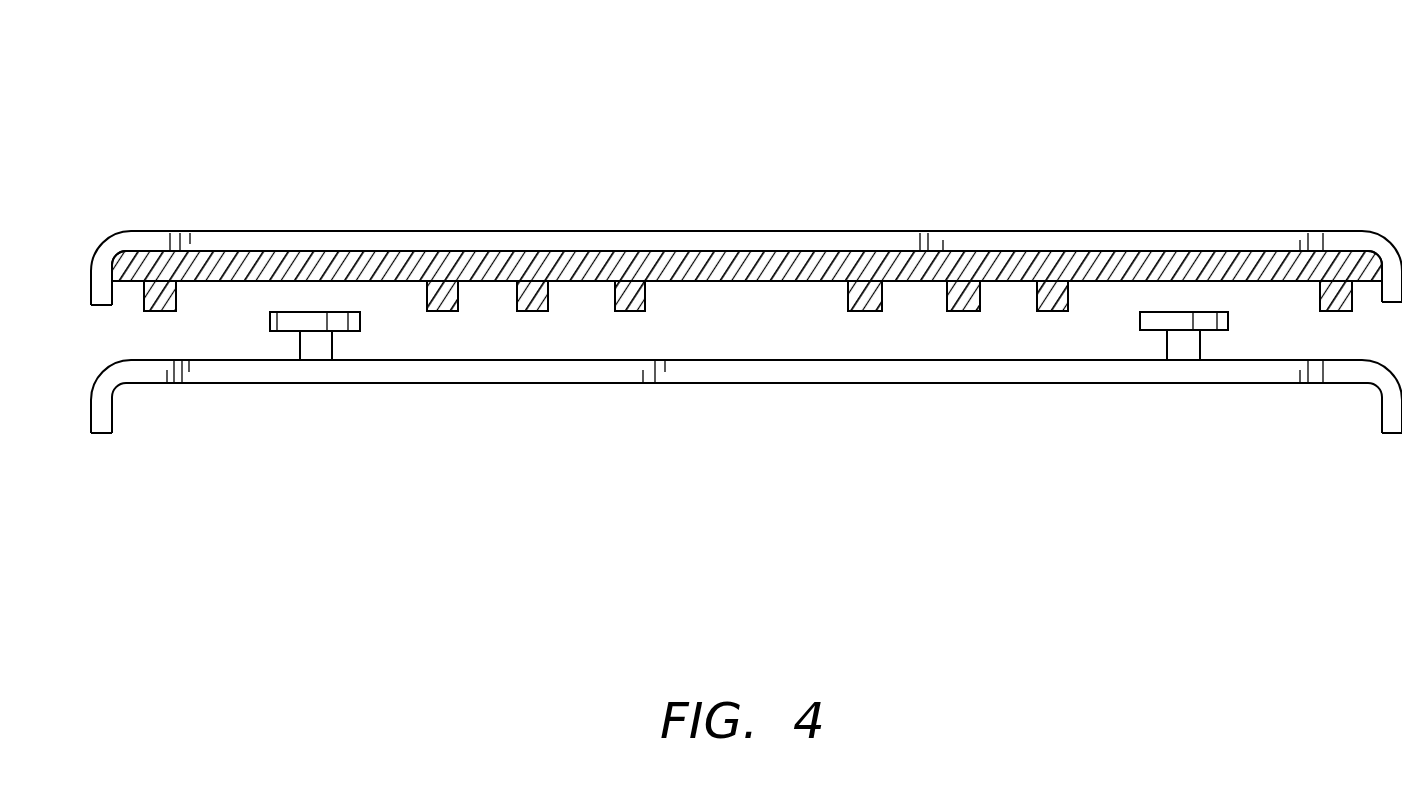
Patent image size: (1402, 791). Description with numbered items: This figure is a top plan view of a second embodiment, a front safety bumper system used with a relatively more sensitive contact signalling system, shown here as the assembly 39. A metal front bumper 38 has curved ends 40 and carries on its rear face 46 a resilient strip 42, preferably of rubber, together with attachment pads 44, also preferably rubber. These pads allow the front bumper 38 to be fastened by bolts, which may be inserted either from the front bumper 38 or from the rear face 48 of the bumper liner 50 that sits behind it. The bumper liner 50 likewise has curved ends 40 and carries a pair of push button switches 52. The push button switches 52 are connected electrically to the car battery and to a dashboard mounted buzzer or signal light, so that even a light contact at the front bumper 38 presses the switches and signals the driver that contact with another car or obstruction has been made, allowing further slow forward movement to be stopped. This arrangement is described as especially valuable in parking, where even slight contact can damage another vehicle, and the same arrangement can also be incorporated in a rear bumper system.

The metal front bumper 38 is at (746, 272).
The heat exchange assembly 39 is at (703, 130).
The curved ends 40 is at (100, 305).
The resilient strip 42 is at (690, 285).
The attachment pads 44 is at (176, 297).
The rear face 46 is at (1108, 283).
The rear face 48 is at (851, 360).
The bumper liner 50 is at (746, 421).
The push button switches 52 is at (318, 325).